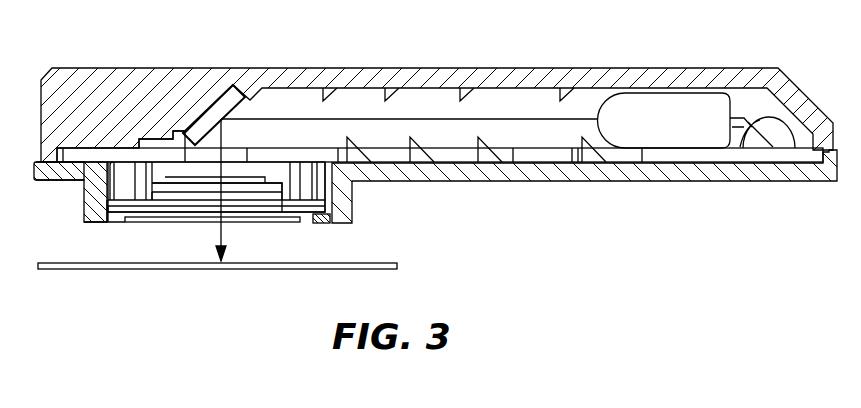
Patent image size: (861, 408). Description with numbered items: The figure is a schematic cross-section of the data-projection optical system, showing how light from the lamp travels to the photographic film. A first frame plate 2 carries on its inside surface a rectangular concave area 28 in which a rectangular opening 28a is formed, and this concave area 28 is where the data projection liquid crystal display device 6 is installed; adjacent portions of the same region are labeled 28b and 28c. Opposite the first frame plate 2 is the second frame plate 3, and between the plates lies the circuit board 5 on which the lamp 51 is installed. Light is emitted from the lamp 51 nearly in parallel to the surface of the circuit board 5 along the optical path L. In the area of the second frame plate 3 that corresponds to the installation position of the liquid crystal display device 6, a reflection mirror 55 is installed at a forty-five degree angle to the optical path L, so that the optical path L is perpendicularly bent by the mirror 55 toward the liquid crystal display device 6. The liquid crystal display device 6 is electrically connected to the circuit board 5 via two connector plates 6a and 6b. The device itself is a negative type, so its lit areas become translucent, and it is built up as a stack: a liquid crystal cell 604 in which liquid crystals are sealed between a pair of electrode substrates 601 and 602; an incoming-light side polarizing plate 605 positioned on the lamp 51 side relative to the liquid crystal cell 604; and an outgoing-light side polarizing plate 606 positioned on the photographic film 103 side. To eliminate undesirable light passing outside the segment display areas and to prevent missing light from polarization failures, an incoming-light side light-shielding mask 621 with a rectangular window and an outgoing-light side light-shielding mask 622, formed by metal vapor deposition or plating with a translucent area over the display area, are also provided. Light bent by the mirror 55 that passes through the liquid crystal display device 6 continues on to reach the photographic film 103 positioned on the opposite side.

The second frame plate 3 is at (294, 68).
The first frame plate 2 is at (630, 171).
The circuit board 5 is at (700, 157).
The lamp 51 is at (670, 107).
The optical path L is at (481, 120).
The reflection mirror 55 is at (218, 110).
The incoming-light side light-shielding mask 621 is at (160, 180).
The rectangular concave area 28 is at (102, 162).
The rectangular opening 28a is at (127, 224).
The bracket arm 28b is at (84, 191).
The bracket corner 28c is at (107, 221).
The data projection liquid crystal display device 6 is at (515, 207).
The connector plate 6a is at (128, 186).
The connector plate 6b is at (307, 172).
The liquid crystal cell 604 is at (430, 213).
The incoming-light side polarizing plate 605 is at (332, 185).
The electrode substrate 601 is at (332, 200).
The electrode substrate 602 is at (332, 218).
The outgoing-light side light-shielding mask 622 is at (264, 216).
The outgoing-light side polarizing plate 606 is at (240, 222).
The photographic film 103 is at (262, 269).